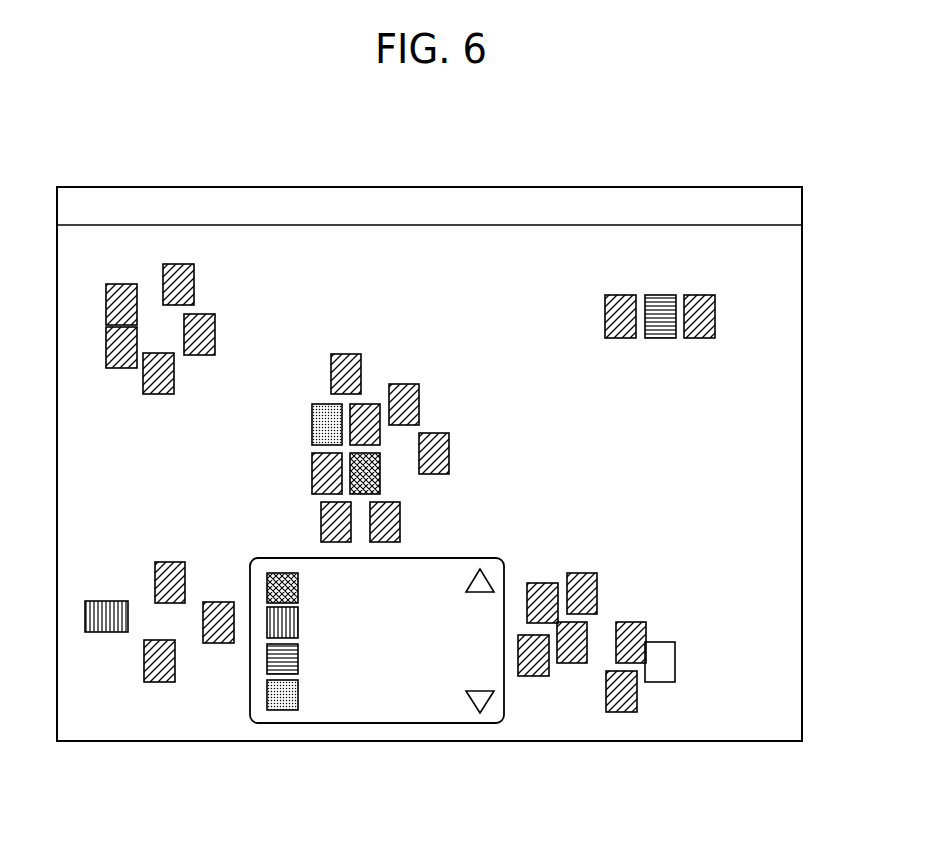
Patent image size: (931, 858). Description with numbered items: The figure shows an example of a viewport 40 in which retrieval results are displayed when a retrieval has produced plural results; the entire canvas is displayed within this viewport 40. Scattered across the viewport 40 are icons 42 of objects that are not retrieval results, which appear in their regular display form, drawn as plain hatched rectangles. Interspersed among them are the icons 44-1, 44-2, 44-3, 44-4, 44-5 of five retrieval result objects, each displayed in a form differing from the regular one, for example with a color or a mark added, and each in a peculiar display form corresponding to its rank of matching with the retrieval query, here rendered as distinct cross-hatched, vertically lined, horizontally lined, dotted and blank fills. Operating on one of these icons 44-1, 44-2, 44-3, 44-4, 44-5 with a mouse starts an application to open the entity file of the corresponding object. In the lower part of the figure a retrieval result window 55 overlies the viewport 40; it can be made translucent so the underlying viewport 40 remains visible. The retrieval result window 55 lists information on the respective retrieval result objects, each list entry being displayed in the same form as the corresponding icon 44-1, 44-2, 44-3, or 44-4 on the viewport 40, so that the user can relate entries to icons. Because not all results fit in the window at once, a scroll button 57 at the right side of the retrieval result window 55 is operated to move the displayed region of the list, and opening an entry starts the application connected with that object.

The viewport 40 is at (596, 245).
The icons not being retrieval results 42 is at (215, 336).
The retrieval result icon 44-1 is at (380, 472).
The retrieval result icon 44-2 is at (106, 600).
The retrieval result icon 44-3 is at (660, 340).
The retrieval result icon 44-4 is at (311, 424).
The retrieval result icon 44-5 is at (658, 642).
The retrieval result window 55 is at (312, 712).
The scroll button 57 is at (490, 582).